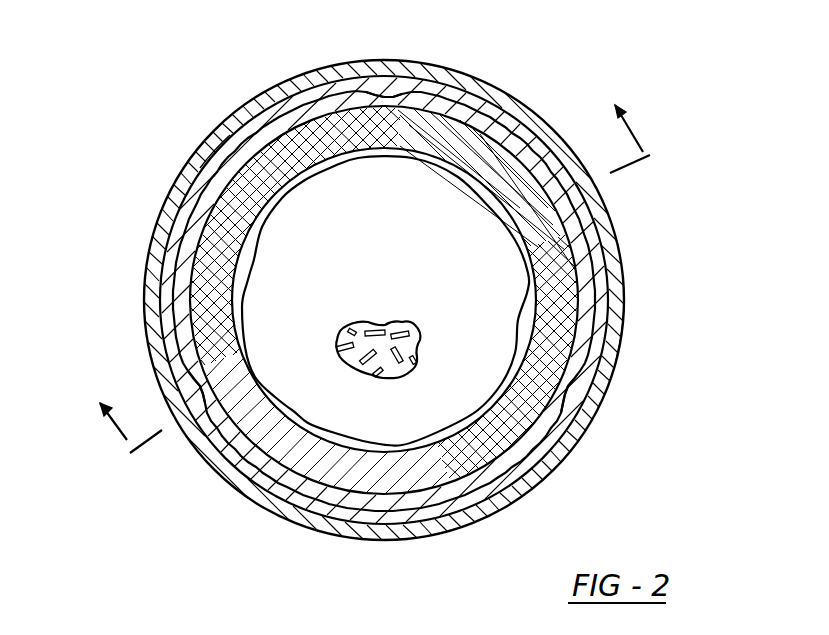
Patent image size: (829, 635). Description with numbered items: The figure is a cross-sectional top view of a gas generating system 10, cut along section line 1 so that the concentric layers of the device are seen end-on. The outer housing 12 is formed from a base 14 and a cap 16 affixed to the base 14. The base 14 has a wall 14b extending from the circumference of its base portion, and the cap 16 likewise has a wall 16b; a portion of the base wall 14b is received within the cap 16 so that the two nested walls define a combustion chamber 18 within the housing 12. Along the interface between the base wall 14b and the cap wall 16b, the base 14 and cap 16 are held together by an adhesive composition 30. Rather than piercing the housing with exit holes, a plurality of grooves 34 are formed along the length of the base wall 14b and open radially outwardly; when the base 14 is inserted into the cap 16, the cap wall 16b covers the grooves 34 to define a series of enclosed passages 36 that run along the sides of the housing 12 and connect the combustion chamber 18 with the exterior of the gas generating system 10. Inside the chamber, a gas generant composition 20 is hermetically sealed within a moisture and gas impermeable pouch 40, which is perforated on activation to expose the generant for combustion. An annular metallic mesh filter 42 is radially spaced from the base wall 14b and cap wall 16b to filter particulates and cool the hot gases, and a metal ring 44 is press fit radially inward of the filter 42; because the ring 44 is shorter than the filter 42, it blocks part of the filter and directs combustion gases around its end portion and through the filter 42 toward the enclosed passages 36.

The section line 1- 1 is at (377, 284).
The gas generating system 10 is at (109, 292).
The housing 12 is at (241, 104).
The base 14 is at (591, 361).
The wall 14b is at (182, 218).
The cap 16 is at (455, 78).
The wall 16b is at (610, 343).
The combustion chamber 18 is at (527, 318).
The gas generant composition 20 is at (360, 332).
The adhesive composition 30 is at (202, 168).
The grooves 34 is at (386, 88).
The enclosed passages 36 is at (388, 84).
The pouch 40 is at (457, 204).
The annular metallic mesh filter 42 is at (448, 440).
The ring 44 is at (507, 210).